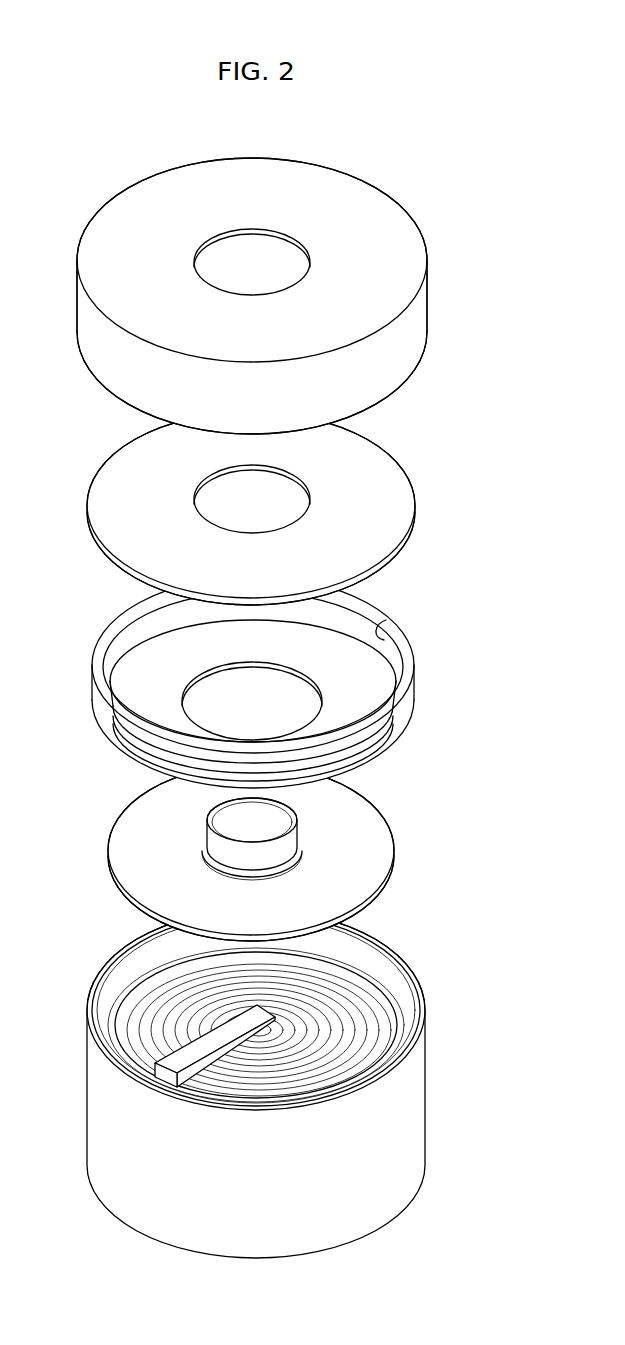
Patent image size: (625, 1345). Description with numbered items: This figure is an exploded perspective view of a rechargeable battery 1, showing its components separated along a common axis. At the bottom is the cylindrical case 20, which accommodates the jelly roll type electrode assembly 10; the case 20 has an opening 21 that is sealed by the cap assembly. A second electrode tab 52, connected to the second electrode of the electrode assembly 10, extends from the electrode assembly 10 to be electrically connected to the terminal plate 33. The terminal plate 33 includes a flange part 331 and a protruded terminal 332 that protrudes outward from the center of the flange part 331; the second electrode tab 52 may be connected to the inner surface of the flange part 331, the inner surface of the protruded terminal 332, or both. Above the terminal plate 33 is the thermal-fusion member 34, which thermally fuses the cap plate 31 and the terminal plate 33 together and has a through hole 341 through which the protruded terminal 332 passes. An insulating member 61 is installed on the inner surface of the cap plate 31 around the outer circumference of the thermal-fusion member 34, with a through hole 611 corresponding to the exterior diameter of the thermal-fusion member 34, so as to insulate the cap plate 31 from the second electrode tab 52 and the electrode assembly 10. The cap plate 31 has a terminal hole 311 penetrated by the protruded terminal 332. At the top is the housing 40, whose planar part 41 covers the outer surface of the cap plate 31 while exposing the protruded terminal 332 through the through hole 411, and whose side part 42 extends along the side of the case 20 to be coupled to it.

The rechargeable battery 1 is at (93, 160).
The electrode assembly 10 is at (358, 983).
The case 20 is at (410, 1127).
The opening 21 is at (142, 943).
The second electrode tab 52 is at (185, 1055).
The cap plate 31 is at (277, 508).
The terminal hole 311 is at (297, 482).
The terminal plate 33 is at (298, 853).
The flange part 331 is at (378, 839).
The protruded terminal 332 is at (268, 817).
The thermal-fusion member 34 is at (229, 704).
The through hole 341 is at (222, 676).
The housing 40 is at (299, 274).
The planar part 41 is at (282, 238).
The side part 42 is at (420, 327).
The through hole 411 is at (255, 232).
The insulating member 61 is at (280, 665).
The through hole 611 is at (386, 620).